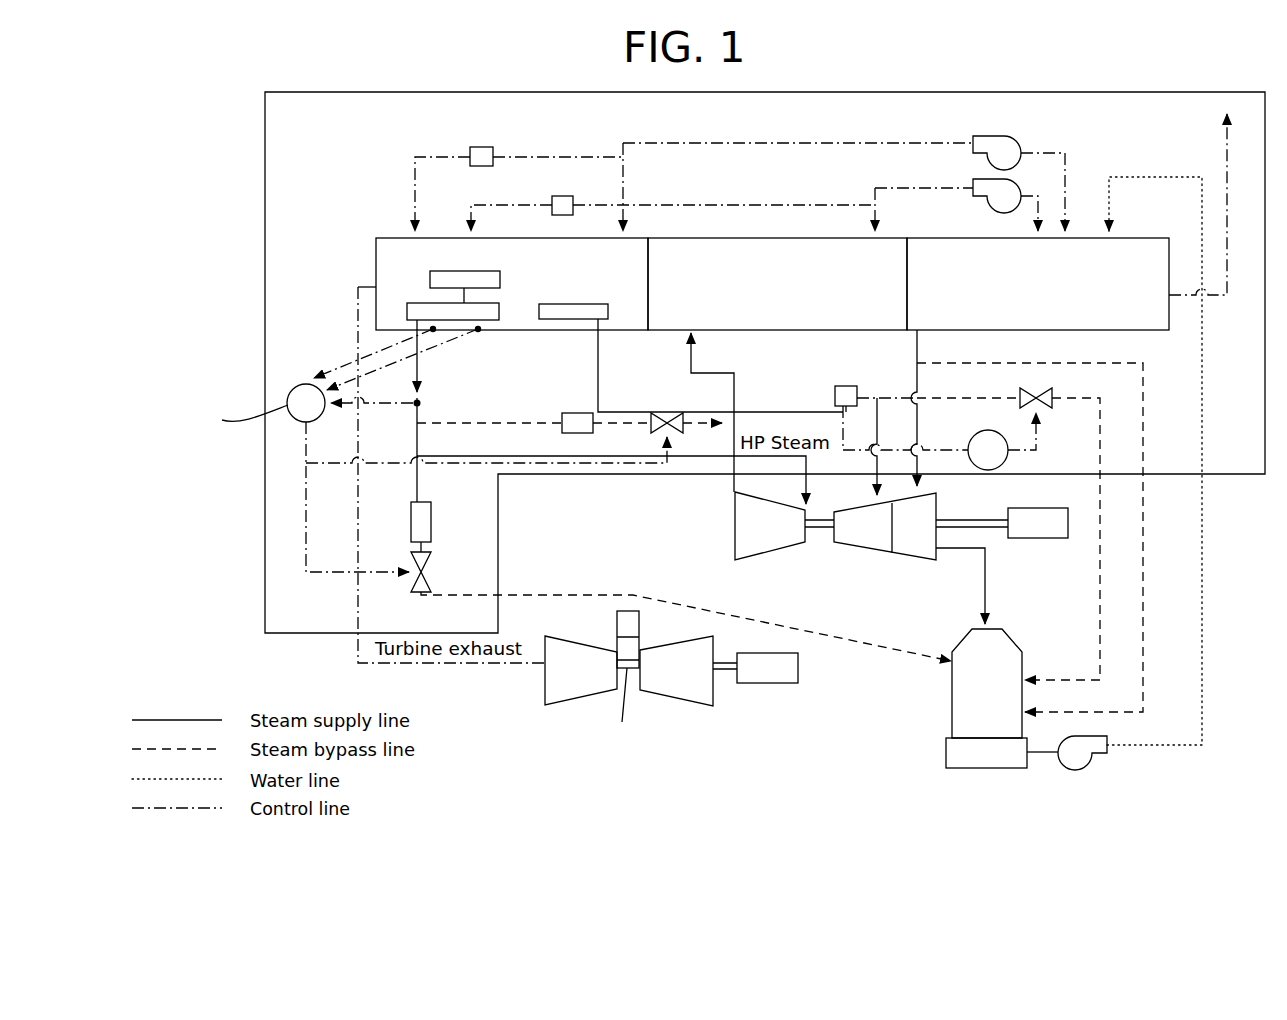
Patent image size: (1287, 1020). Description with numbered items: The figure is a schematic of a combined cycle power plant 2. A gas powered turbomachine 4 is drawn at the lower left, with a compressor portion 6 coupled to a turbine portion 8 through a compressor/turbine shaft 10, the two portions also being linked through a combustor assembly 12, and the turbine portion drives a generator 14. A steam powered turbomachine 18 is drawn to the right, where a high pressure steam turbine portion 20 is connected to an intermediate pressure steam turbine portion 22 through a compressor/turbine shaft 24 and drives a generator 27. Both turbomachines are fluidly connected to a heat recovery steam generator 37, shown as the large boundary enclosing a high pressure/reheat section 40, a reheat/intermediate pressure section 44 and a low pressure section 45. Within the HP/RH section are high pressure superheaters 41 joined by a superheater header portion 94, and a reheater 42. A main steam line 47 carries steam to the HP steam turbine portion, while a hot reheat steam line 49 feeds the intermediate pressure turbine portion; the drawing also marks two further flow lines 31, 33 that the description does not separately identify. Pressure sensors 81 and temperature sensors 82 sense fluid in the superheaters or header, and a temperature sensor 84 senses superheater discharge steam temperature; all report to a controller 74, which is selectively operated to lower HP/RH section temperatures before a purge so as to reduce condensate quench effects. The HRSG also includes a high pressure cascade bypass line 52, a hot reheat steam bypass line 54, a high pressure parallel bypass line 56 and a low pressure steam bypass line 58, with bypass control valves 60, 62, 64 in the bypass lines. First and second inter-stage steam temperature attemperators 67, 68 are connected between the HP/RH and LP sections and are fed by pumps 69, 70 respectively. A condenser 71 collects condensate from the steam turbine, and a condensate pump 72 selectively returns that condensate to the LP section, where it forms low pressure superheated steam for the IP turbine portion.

The combined cycle power plant 2 is at (619, 696).
The gas powered turbomachine 4 is at (645, 691).
The compressor portion 6 is at (568, 696).
The turbine portion 8 is at (697, 702).
The compressor/turbine shaft 10 is at (619, 713).
The combustor assembly 12 is at (634, 621).
The generator 14 is at (770, 680).
The steam powered turbomachine 18 is at (905, 557).
The high pressure steam turbine portion 20 is at (765, 543).
The intermediate pressure steam turbine portion 22 is at (880, 544).
The compressor/turbine shaft 24 is at (820, 517).
The generator 27 is at (1025, 540).
The HP parallel bypass line 31 is at (415, 484).
The hot reheat steam line 33 is at (735, 388).
The heat recovery steam generator 37 is at (263, 190).
The high pressure/reheat section 40 is at (413, 284).
The high pressure superheaters 41 is at (458, 271).
The reheater 42 is at (605, 304).
The reheat/intermediate pressure section 44 is at (689, 284).
The low pressure section 45 is at (948, 284).
The main steam line 47 is at (413, 383).
The hot reheat steam line 49 is at (601, 362).
The high pressure cascade bypass line 52 is at (580, 413).
The hot reheat steam bypass line 54 is at (1101, 458).
The high pressure parallel bypass line 56 is at (650, 595).
The low pressure steam bypass line 58 is at (1145, 460).
The bypass control valve 60 is at (673, 437).
The bypass control valve 62 is at (1046, 405).
The bypass control valve 64 is at (428, 565).
The first inter-stage steam temperature attemperator 67 is at (484, 147).
The second inter-stage steam temperature attemperator 68 is at (565, 196).
The pump 69 is at (1010, 142).
The pump 70 is at (1000, 203).
The condenser 71 is at (998, 698).
The condensate pump 72 is at (1076, 765).
The controller 74 is at (299, 386).
The pressure sensors 81 is at (375, 352).
The temperature sensors 82 is at (482, 333).
The temperature sensor 84 is at (421, 401).
The superheater header portion 94 is at (500, 318).